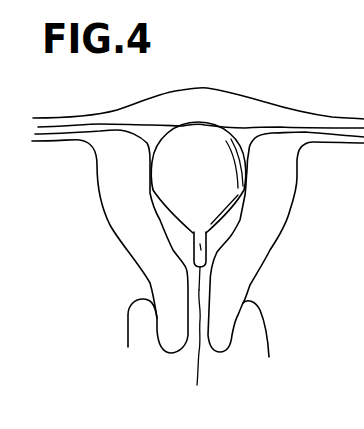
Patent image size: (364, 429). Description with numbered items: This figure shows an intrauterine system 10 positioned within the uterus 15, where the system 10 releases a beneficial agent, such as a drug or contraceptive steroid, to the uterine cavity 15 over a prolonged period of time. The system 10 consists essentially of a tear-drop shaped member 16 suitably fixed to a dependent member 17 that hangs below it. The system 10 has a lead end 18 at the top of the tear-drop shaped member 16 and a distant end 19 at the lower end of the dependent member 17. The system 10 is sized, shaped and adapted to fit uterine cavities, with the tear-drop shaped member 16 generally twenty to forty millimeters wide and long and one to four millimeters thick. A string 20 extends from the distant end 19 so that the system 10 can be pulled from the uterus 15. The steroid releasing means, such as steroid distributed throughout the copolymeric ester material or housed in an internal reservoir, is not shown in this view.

The intrauterine system 10 is at (226, 226).
The uterus 15 is at (178, 230).
The tear-drop shaped member 16 is at (227, 178).
The dependent member 17 is at (206, 260).
The lead end 18 is at (197, 125).
The distant end 19 is at (203, 282).
The string 20 is at (197, 373).